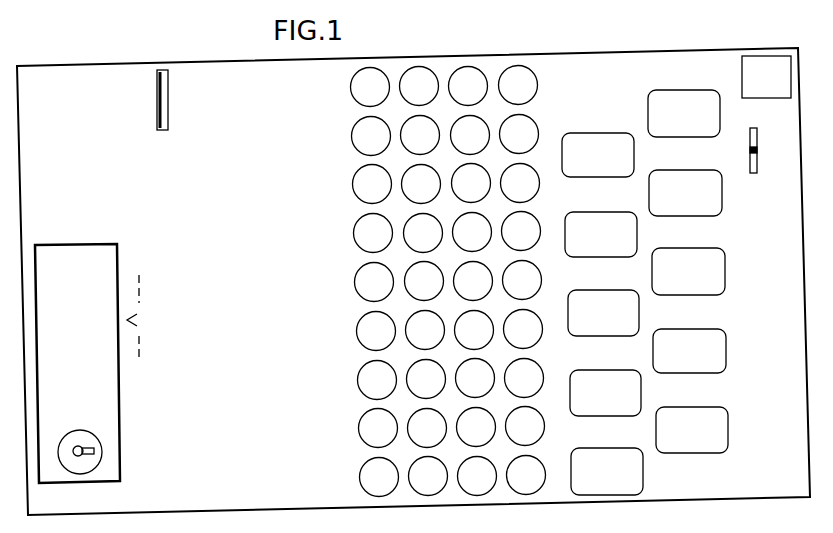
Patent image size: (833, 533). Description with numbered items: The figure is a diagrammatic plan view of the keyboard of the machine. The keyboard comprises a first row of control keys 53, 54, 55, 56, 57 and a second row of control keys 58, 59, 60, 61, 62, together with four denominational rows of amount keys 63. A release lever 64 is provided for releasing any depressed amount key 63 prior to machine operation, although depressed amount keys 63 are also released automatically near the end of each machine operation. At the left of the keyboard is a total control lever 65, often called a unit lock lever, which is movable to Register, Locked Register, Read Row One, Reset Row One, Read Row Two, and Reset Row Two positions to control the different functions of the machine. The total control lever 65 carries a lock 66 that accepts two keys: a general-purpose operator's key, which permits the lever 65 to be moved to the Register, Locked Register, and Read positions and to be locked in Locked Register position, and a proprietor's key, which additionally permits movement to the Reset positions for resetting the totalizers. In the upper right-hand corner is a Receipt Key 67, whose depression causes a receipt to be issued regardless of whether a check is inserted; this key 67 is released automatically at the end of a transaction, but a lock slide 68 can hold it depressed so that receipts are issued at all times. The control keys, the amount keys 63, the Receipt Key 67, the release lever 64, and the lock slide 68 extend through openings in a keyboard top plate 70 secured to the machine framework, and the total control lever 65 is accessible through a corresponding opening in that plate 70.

The control key 53 is at (670, 100).
The control key 54 is at (685, 178).
The control key 55 is at (712, 258).
The control key 56 is at (712, 332).
The control key 57 is at (710, 410).
The control key 58 is at (580, 137).
The control key 59 is at (595, 215).
The control key 60 is at (595, 292).
The control key 61 is at (600, 373).
The control key 62 is at (618, 430).
The amount keys 63 is at (409, 70).
The release lever 64 is at (168, 115).
The total control lever 65 is at (110, 425).
The lock 66 is at (92, 460).
The Receipt Key 67 is at (752, 97).
The lock slide 68 is at (757, 148).
The keyboard top plate 70 is at (271, 62).